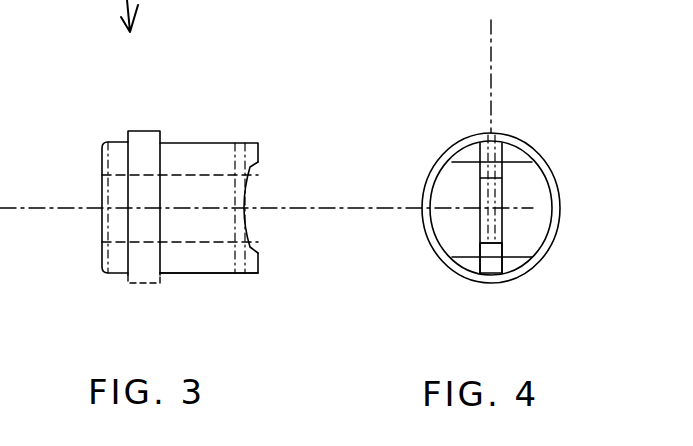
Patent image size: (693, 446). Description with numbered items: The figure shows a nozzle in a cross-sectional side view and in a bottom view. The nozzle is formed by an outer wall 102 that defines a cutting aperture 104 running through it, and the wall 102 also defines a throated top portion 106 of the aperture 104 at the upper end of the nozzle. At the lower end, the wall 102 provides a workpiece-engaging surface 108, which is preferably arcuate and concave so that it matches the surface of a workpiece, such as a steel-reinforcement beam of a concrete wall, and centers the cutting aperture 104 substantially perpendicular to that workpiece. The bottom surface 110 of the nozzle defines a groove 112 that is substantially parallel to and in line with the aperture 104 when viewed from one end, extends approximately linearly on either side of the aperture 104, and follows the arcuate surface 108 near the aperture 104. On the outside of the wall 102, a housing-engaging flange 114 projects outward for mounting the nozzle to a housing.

In FIG. 3, the outer wall 102 is at (183, 262).
In FIG. 4, the cutting aperture 104 is at (487, 192).
In FIG. 3, the throated top portion 106 is at (110, 174).
In FIG. 3, the workpiece-engaging surface 108 is at (250, 172).
In FIG. 4, the workpiece-engaging surface 108 is at (525, 192).
In FIG. 3, the bottom surface 110 is at (272, 270).
In FIG. 4, the bottom surface 110 is at (380, 313).
In FIG. 4, the groove 112 is at (490, 265).
In FIG. 3, the housing-engaging flange 114 is at (155, 134).
In FIG. 4, the housing-engaging flange 114 is at (545, 163).